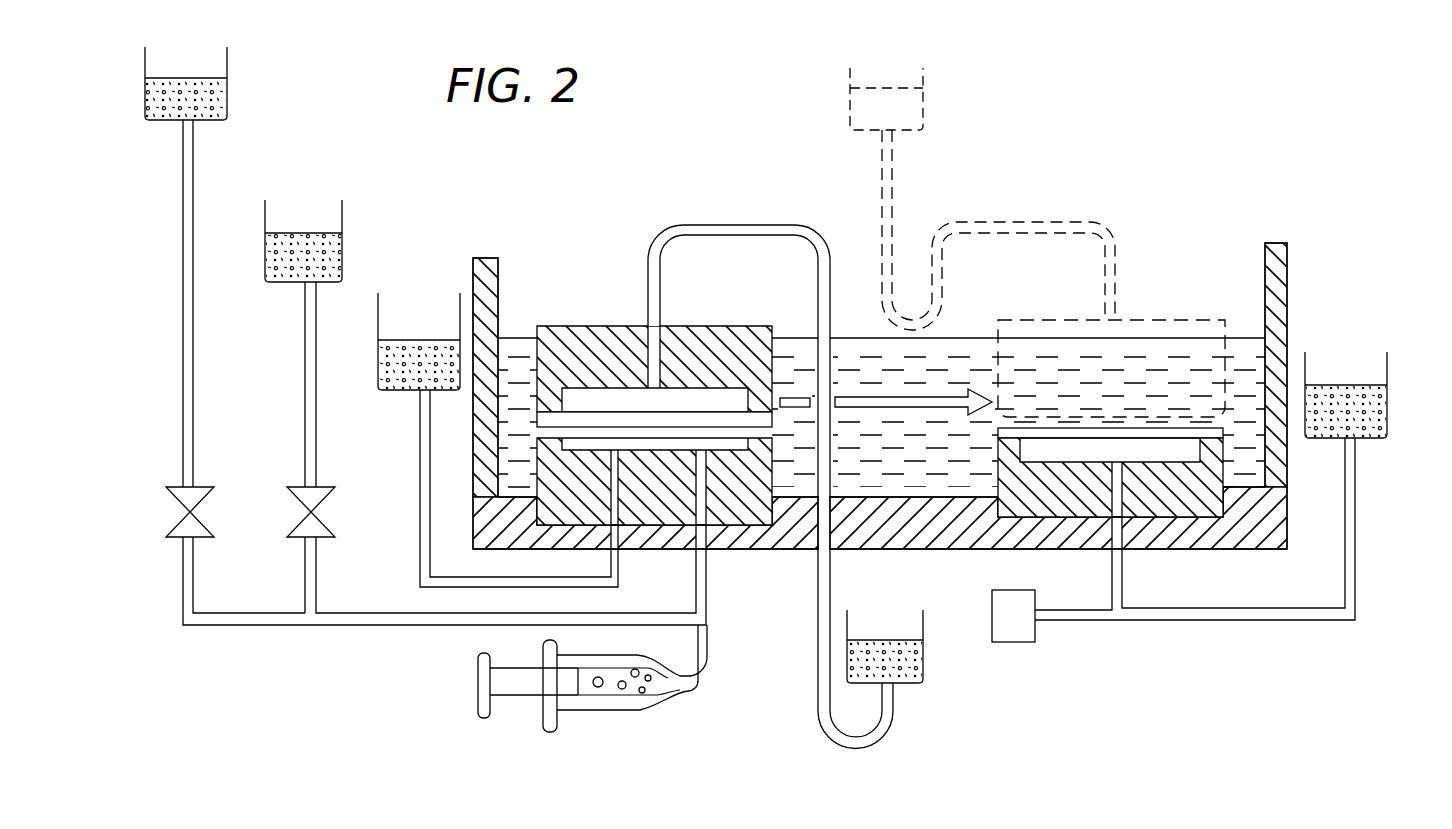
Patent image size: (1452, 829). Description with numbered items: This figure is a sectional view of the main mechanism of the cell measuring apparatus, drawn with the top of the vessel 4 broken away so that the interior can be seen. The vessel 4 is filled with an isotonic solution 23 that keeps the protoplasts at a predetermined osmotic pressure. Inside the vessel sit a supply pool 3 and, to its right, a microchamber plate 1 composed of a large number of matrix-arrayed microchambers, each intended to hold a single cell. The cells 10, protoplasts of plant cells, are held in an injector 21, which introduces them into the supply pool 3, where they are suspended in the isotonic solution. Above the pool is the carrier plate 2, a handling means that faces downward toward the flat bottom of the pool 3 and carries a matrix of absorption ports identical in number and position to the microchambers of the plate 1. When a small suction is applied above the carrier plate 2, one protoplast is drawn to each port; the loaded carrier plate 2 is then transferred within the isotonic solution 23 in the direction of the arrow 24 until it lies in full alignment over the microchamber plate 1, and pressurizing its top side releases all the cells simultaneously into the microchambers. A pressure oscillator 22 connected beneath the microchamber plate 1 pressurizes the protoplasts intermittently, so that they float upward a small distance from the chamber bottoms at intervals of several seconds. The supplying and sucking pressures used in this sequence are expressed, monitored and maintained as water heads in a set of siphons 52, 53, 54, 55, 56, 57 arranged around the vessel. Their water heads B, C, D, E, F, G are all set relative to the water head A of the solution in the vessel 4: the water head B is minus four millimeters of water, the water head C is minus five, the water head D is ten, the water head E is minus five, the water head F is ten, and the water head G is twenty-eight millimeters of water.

The microchamber plate 1 is at (1123, 422).
The carrier plate 2 is at (586, 402).
The supply pool 3 is at (764, 540).
The vessel 4 is at (1290, 264).
The cells 10 is at (589, 700).
The injector 21 is at (653, 698).
The pressure oscillator 22 is at (1036, 644).
The isotonic solution 23 is at (1243, 352).
The arrow 24 is at (868, 394).
The siphon 52 is at (1365, 438).
The siphon 53 is at (868, 640).
The siphon 54 is at (923, 115).
The siphon 55 is at (395, 390).
The siphon 56 is at (268, 250).
The siphon 57 is at (228, 98).
The water head A is at (961, 335).
The water head B is at (1352, 385).
The water head C is at (923, 610).
The water head D is at (897, 88).
The water head E is at (420, 342).
The water head F is at (320, 233).
The water head G is at (207, 78).